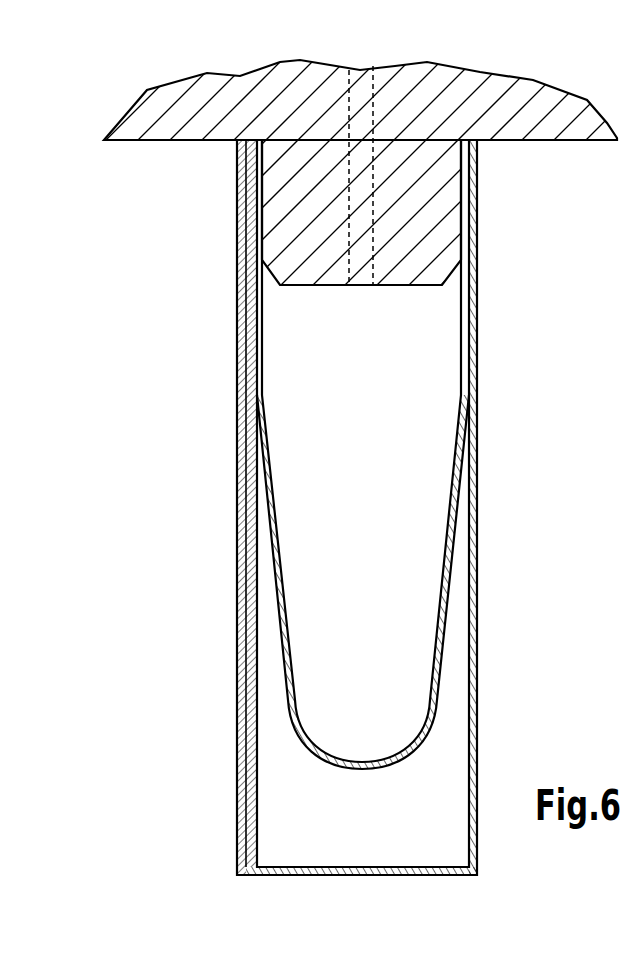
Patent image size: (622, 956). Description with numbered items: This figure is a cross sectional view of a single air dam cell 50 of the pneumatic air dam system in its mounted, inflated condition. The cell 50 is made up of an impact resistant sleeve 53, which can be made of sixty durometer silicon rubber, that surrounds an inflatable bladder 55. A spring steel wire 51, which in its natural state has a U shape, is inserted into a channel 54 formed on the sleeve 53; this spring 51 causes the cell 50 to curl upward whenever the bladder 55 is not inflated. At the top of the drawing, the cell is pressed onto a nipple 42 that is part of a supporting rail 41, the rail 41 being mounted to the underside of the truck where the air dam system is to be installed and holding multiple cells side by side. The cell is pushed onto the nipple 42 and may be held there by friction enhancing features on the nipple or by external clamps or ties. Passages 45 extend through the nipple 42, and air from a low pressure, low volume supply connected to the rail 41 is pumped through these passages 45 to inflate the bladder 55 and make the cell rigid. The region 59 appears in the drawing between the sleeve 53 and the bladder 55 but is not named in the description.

The cap head 41 is at (545, 100).
The plug / insert body 42 is at (427, 223).
The bore 45 is at (358, 288).
The sample container assembly 50 is at (351, 507).
The tube wall 51 is at (241, 807).
The tube 53 is at (477, 748).
The outer layer 54 is at (239, 752).
The liner wall 55 is at (450, 602).
The liner cavity 59 is at (455, 698).